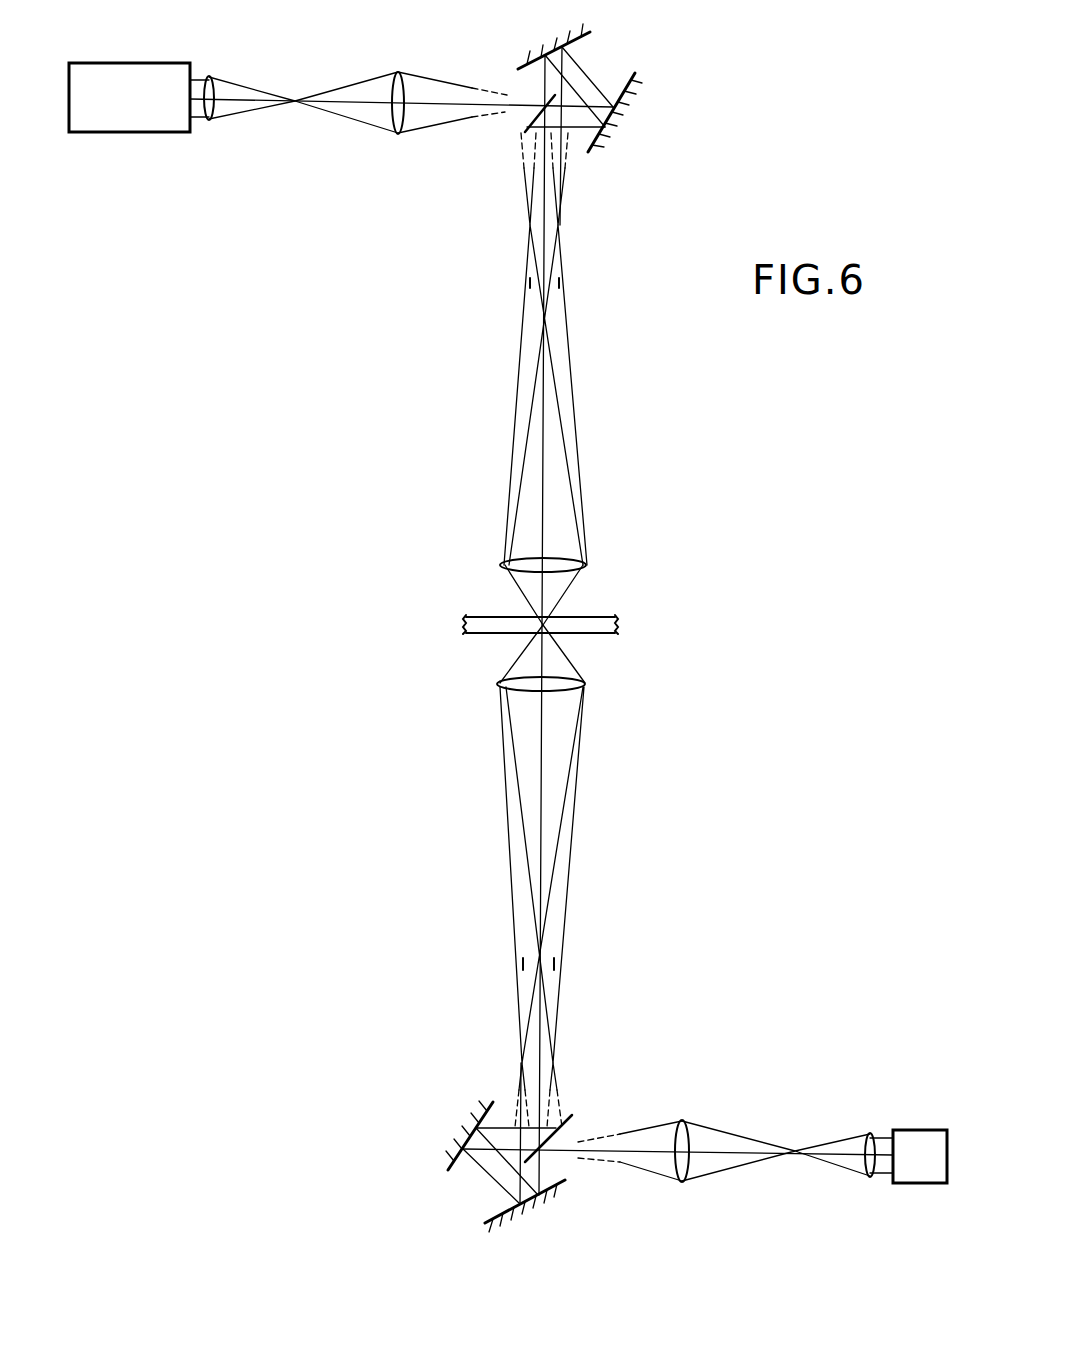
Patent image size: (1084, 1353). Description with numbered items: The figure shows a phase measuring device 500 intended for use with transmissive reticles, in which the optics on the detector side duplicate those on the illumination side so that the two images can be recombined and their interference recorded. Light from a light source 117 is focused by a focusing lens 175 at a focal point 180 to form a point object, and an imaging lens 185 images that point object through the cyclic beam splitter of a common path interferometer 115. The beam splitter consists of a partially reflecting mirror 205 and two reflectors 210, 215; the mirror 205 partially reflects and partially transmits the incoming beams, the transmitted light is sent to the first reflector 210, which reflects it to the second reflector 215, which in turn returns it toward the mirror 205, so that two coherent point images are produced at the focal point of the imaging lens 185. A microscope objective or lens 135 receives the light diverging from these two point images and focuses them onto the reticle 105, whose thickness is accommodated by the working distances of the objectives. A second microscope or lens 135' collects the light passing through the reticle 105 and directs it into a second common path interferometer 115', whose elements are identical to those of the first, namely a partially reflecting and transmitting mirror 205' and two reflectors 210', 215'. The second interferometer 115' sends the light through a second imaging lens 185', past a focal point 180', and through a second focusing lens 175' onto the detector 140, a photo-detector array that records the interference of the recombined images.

The light source 117 is at (122, 133).
The focusing lens 175 is at (249, 135).
The focal point 180 is at (338, 84).
The imaging lens 185 is at (428, 134).
The partially reflecting mirror 205 is at (523, 160).
The first reflector 210 is at (612, 99).
The second reflector 215 is at (530, 124).
The common path interferometer 115 is at (623, 76).
The objective or lens 135 is at (572, 568).
The reticle 105 is at (600, 617).
The second microscope or lens 135' is at (571, 844).
The phase measuring device 500 is at (277, 761).
The second reflector of second interferometer 215' is at (476, 1143).
The first reflector of second interferometer 210' is at (541, 1180).
The partially reflecting and transmitting mirror 205' is at (580, 1121).
The second imaging lens 185' is at (707, 1128).
The focal point 180' is at (815, 1179).
The second focusing lens 175' is at (860, 1126).
The detector 140 is at (923, 1132).
The second common path interferometer 115' is at (363, 1170).